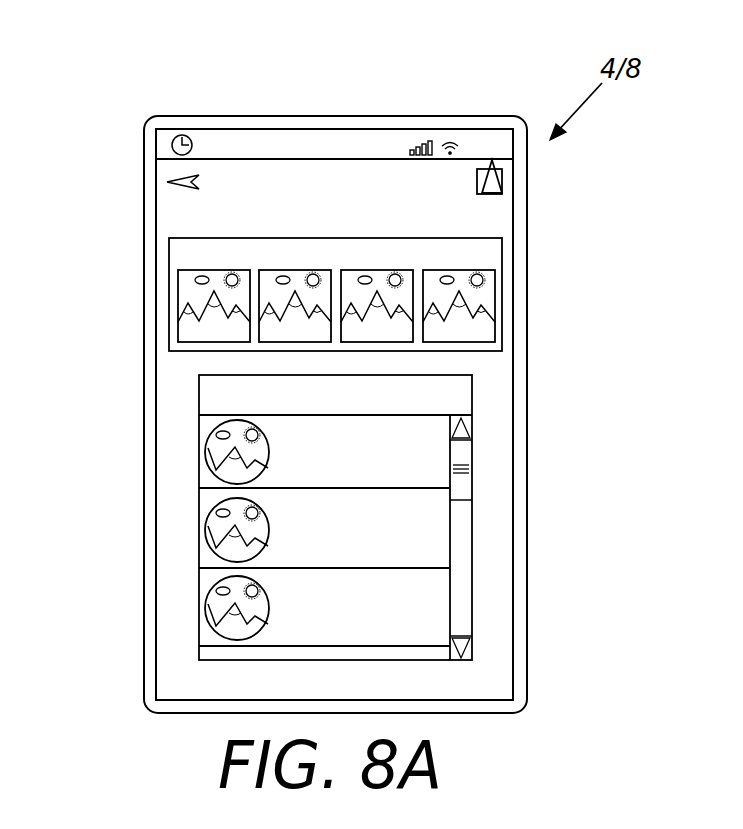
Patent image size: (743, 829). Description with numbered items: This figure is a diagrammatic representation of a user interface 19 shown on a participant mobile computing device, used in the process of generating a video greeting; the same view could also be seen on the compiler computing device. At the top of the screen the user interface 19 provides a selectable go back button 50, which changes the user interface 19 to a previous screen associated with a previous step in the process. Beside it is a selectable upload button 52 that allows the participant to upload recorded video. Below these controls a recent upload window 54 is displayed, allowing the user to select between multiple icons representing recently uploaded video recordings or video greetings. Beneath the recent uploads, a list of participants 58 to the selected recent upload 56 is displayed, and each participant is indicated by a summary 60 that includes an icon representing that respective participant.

The user interface 19 is at (362, 203).
The go back button 50 is at (167, 182).
The upload button 52 is at (502, 178).
The recent upload window 54 is at (502, 238).
The selected recent upload 56 is at (423, 342).
The list of participants 58 is at (199, 383).
The summary 60 is at (199, 577).